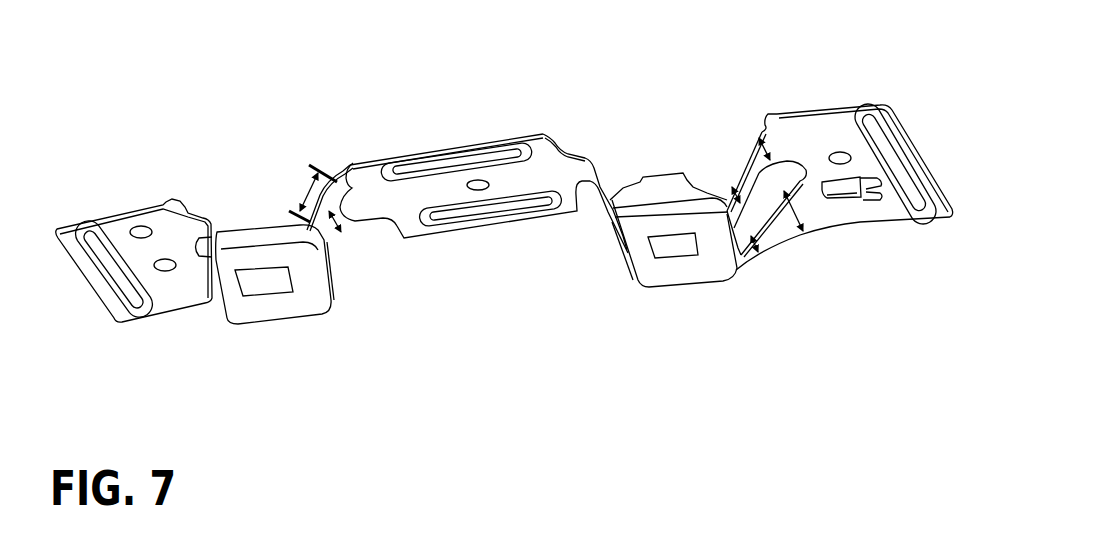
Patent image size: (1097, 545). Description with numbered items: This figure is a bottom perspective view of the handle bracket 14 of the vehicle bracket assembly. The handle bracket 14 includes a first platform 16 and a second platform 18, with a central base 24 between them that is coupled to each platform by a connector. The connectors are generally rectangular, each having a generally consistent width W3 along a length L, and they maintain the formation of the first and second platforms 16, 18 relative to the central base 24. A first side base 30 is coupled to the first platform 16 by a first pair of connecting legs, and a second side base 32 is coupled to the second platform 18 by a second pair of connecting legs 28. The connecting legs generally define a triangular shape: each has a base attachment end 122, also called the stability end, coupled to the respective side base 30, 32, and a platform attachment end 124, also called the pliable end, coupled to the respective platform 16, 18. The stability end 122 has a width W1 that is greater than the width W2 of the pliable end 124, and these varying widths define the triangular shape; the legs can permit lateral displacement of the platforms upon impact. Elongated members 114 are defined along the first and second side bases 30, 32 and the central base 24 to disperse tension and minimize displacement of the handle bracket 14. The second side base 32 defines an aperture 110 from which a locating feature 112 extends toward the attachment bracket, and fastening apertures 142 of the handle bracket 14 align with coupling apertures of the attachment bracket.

The handle bracket 14 is at (133, 163).
The first platform 16 is at (270, 302).
The second platform 18 is at (680, 264).
The central base 24 is at (527, 178).
The second pair of connecting legs 28 is at (771, 246).
The first side base 30 is at (164, 290).
The second side base 32 is at (823, 132).
The aperture 110 is at (843, 188).
The locating feature 112 is at (865, 181).
The elongated members 114 is at (111, 270).
The base attachment end 122 is at (768, 128).
The platform attachment end 124 is at (723, 213).
The fastening apertures 142 is at (840, 151).
The length L is at (305, 195).
The width of the stability end W1 is at (757, 143).
The width of the pliable end W2 is at (735, 194).
The width of the connector W3 is at (330, 212).